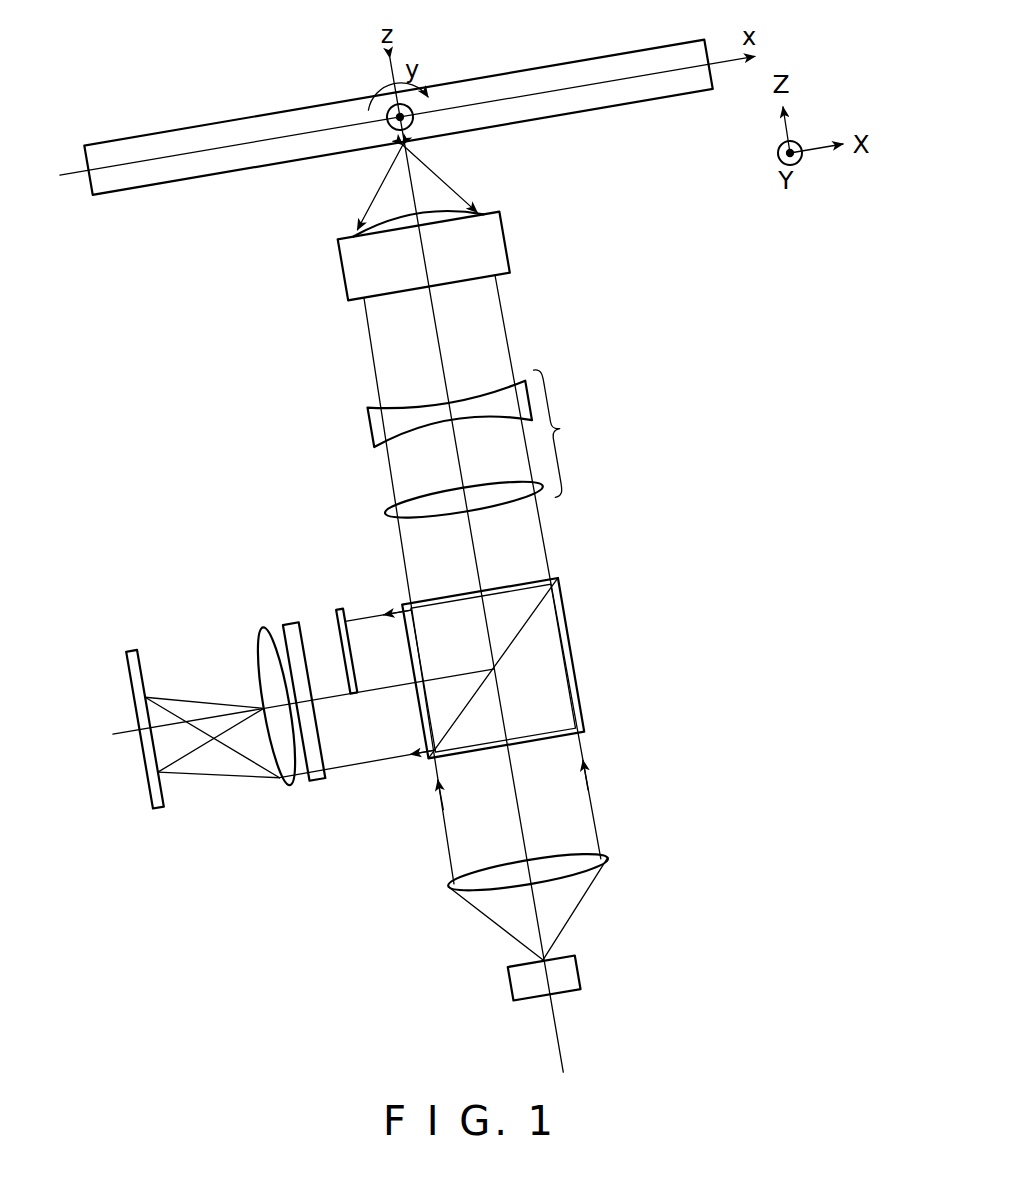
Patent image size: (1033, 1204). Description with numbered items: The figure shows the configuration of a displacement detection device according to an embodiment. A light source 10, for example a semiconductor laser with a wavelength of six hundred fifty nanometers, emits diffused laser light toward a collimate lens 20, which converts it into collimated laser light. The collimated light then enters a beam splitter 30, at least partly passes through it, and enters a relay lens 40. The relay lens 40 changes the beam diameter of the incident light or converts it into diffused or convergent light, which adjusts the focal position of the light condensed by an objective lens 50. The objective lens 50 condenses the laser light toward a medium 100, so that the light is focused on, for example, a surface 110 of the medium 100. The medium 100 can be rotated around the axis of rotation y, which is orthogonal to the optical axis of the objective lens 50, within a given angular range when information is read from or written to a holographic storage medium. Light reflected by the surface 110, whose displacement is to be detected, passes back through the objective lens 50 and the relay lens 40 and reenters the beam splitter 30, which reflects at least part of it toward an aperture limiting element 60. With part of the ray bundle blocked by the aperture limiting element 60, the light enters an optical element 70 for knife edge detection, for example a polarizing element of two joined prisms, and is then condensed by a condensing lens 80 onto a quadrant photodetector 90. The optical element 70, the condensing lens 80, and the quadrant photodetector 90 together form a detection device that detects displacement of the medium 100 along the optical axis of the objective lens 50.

The light source 10 is at (595, 957).
The collimate lens 20 is at (608, 859).
The beam splitter 30 is at (563, 597).
The relay lens 40 is at (482, 446).
The objective lens 50 is at (517, 233).
The aperture limiting element 60 is at (337, 608).
The optical element for knife edge detection 70 is at (320, 780).
The condensing lens 80 is at (263, 628).
The quadrant photodetector 90 is at (130, 650).
The medium 100 is at (541, 73).
The surface of the medium 110 is at (287, 165).